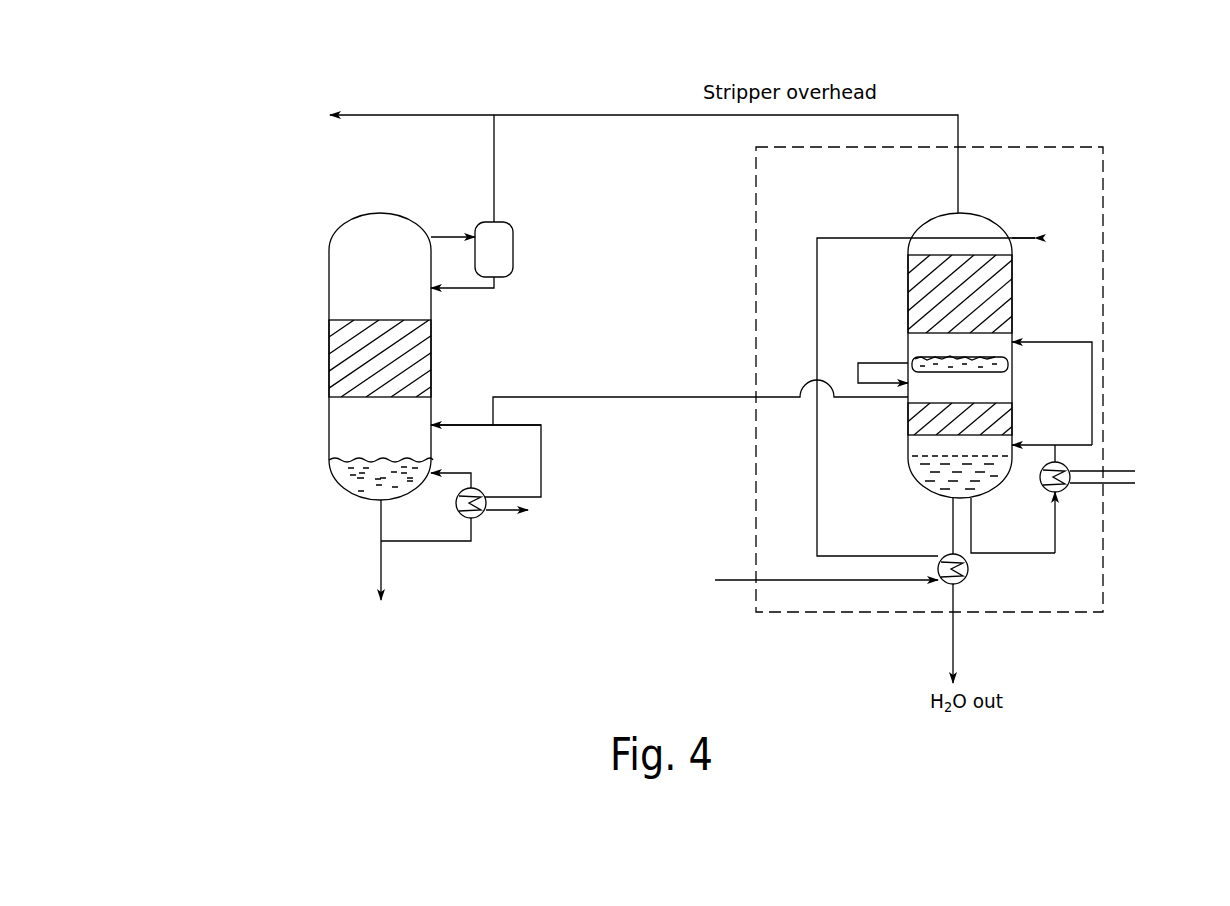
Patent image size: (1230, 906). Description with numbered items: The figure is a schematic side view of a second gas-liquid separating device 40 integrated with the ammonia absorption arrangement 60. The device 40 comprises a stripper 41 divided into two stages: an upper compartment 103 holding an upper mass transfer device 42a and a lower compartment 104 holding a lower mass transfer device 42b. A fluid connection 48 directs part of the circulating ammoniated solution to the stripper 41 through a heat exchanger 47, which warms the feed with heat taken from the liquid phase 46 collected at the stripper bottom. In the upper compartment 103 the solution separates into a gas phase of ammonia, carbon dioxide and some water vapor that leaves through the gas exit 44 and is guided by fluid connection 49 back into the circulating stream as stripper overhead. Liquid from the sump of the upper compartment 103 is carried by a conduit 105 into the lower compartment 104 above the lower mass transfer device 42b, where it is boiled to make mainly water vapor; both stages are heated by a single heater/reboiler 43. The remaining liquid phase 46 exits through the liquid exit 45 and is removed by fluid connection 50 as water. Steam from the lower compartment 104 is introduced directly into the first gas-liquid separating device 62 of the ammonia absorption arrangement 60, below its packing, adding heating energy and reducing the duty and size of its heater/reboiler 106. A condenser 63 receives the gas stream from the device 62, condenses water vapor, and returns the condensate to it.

The gas-liquid separating device 40 is at (1032, 146).
The stripper 41 is at (1000, 225).
The upper mass transfer device 42a is at (1000, 288).
The lower mass transfer device 42b is at (1002, 418).
The heater/reboiler 43 is at (1068, 491).
The gas exit 44 is at (958, 212).
The liquid exit 45 is at (948, 500).
The liquid phase 46 is at (921, 475).
The heat exchanger 47 is at (967, 575).
The fluid connection 48 is at (760, 580).
The fluid connection 49 is at (920, 114).
The fluid connection 50 is at (952, 618).
The ammonia absorption arrangement 60 is at (298, 405).
The gas-liquid separating device 62 is at (341, 306).
The condenser 63 is at (505, 251).
The upper compartment 103 is at (1077, 346).
The lower compartment 104 is at (1003, 447).
The conduit 105 is at (864, 362).
The heater/reboiler 106 is at (472, 490).